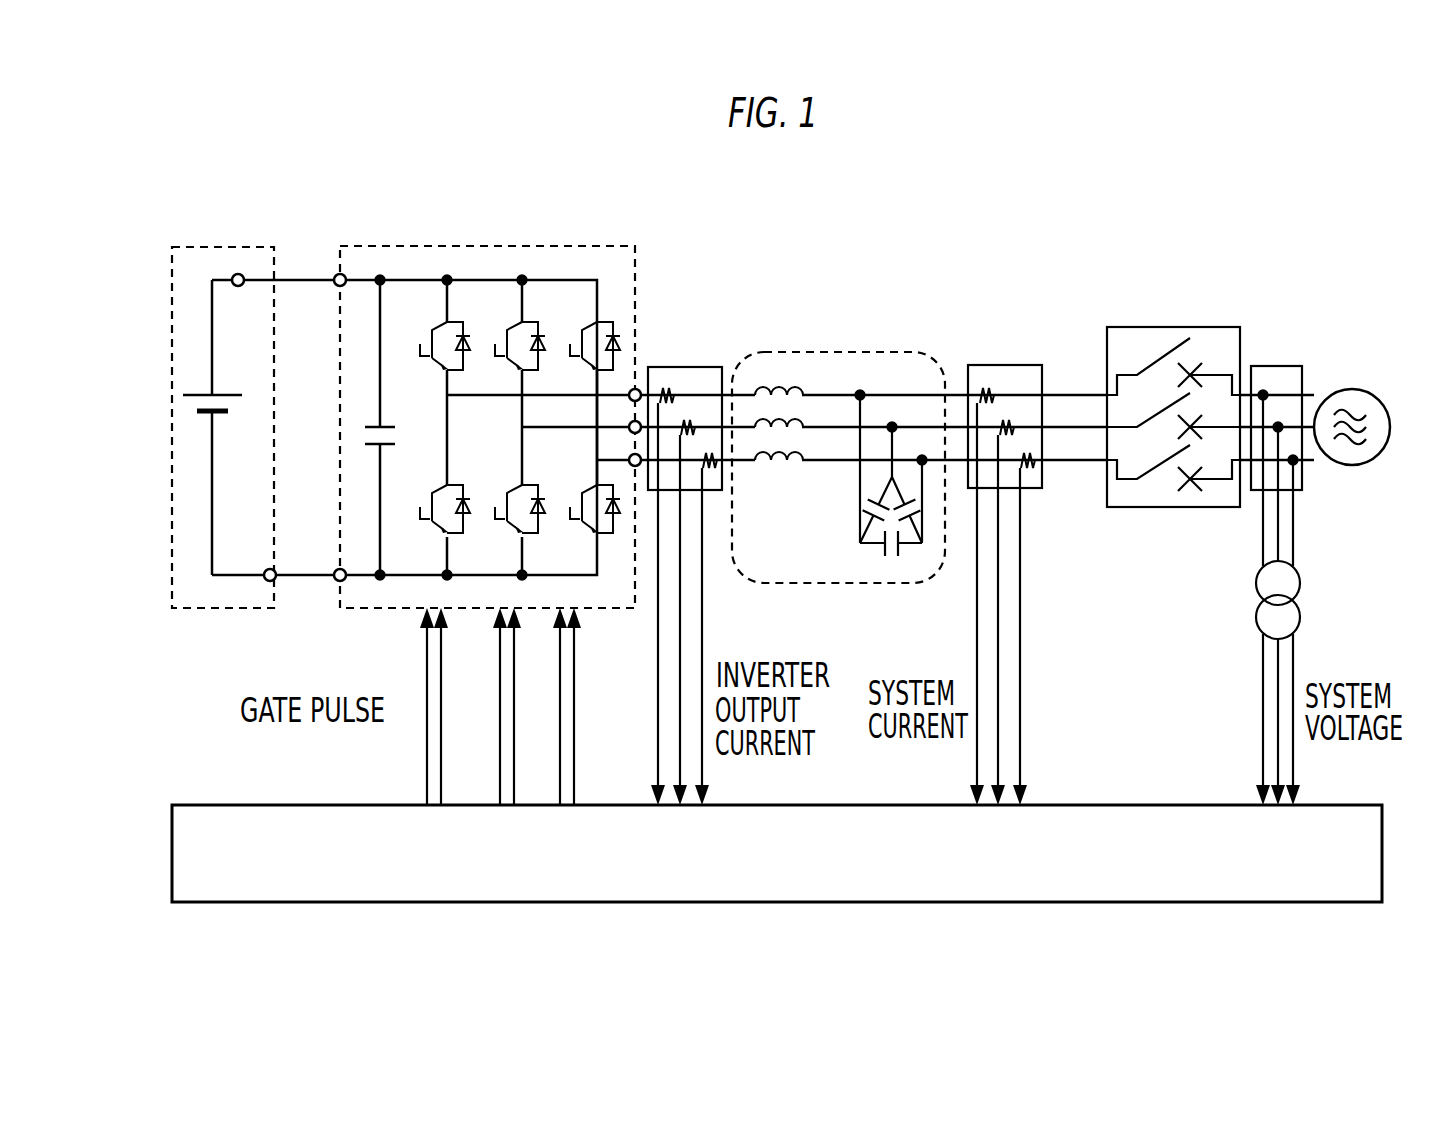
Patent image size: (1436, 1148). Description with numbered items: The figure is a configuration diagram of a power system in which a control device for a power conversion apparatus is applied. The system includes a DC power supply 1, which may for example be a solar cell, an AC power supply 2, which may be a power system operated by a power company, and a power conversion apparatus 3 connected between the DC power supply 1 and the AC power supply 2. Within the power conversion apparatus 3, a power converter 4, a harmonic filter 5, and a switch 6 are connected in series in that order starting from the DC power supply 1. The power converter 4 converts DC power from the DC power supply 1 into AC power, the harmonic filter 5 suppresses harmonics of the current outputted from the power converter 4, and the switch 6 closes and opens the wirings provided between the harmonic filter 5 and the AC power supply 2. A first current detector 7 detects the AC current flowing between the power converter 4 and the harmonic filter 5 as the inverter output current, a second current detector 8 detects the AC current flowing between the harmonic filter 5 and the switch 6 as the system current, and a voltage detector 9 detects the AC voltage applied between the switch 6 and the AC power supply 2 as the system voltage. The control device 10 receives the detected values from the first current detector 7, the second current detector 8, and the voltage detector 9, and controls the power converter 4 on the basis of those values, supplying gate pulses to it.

The DC power supply 1 is at (275, 262).
The AC power supply 2 is at (1350, 390).
The power conversion apparatus 3 is at (990, 238).
The power converter 4 is at (637, 262).
The harmonic filter 5 is at (940, 355).
The switch 6 is at (1120, 327).
The first current detector 7 is at (687, 367).
The second current detector 8 is at (1005, 365).
The voltage detector 9 is at (1277, 366).
The control device 10 is at (1346, 805).